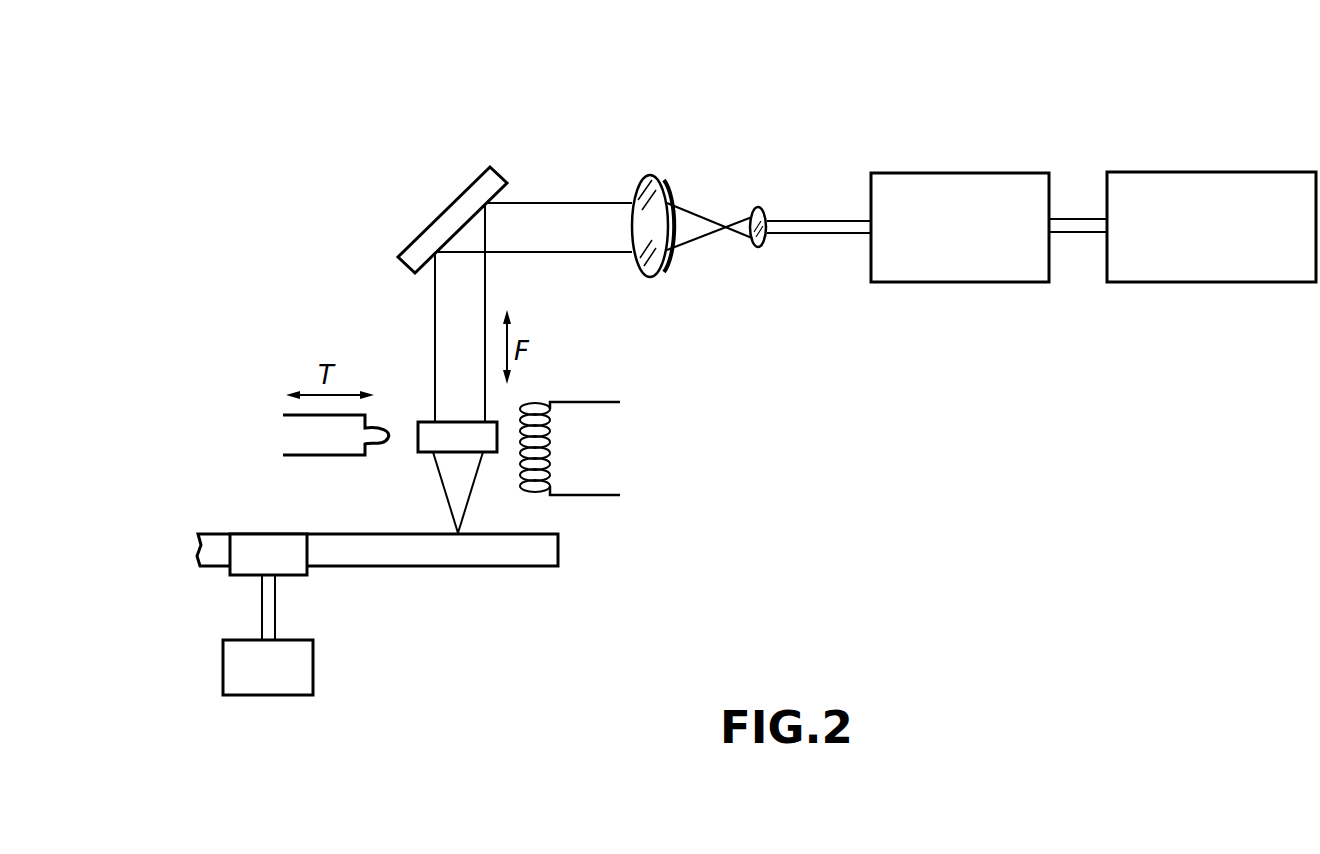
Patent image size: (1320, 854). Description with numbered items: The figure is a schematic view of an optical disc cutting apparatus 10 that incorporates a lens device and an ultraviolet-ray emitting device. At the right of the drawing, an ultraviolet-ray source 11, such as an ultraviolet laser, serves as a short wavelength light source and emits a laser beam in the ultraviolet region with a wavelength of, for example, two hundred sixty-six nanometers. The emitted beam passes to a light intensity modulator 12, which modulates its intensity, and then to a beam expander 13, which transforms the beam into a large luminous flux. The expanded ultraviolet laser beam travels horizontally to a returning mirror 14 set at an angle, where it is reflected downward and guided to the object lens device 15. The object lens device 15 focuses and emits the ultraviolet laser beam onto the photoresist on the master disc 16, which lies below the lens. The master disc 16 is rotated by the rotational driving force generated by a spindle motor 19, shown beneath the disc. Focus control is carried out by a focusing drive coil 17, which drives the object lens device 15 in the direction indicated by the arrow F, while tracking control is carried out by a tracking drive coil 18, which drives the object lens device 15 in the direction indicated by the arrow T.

The optical disc cutting apparatus 10 is at (703, 130).
The ultraviolet-ray source 11 is at (1215, 172).
The light intensity modulator 12 is at (965, 173).
The beam expander 13 is at (722, 253).
The returning mirror 14 is at (438, 210).
The object lens device 15 is at (418, 422).
The master disc 16 is at (558, 550).
The focusing drive coil 17 is at (530, 402).
The tracking drive coil 18 is at (377, 452).
The spindle motor 19 is at (313, 672).